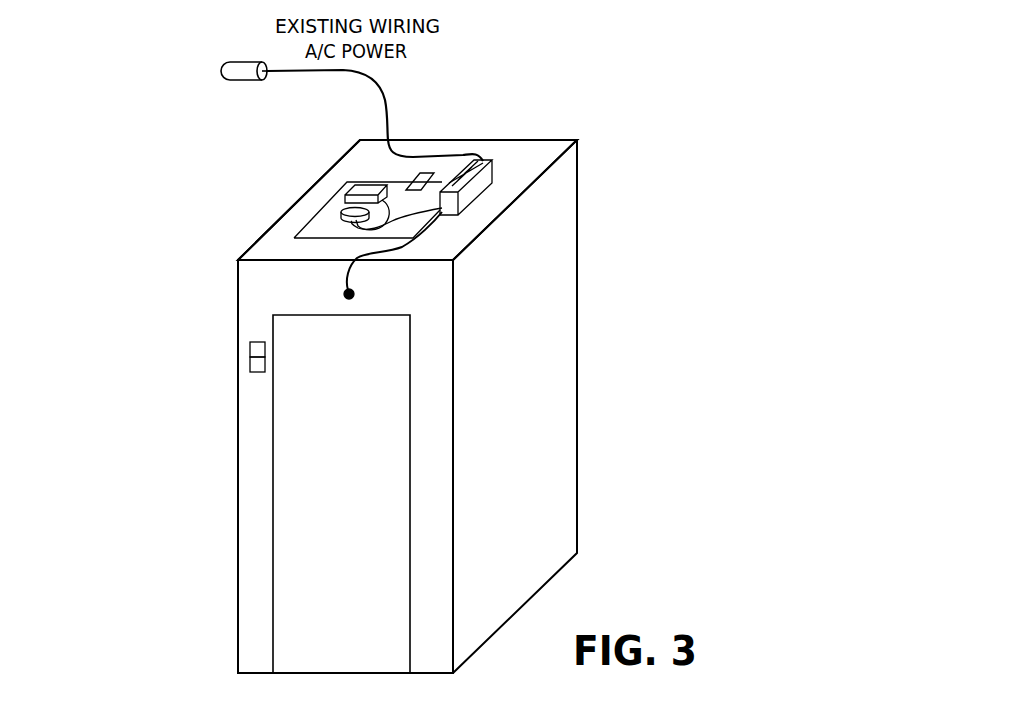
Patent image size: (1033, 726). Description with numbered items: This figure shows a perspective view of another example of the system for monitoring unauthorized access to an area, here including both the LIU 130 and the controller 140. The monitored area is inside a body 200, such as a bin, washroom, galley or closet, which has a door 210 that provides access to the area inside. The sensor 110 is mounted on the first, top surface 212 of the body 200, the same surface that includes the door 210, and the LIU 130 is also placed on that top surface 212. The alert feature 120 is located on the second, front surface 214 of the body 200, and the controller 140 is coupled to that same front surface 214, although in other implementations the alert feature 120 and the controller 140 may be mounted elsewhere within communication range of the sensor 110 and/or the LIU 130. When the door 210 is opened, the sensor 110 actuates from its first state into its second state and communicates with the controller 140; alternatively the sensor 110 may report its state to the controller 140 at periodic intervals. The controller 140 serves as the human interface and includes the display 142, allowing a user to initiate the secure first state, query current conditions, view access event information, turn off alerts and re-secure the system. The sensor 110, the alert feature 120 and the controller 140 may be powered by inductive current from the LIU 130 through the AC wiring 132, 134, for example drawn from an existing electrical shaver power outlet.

The body 200 is at (577, 397).
The first surface 212 is at (360, 152).
The door 210 is at (317, 210).
The second surface 214 is at (257, 425).
The AC wiring 134 is at (388, 104).
The sensor 110 is at (436, 172).
The LIU 130 is at (492, 167).
The AC wiring 132 is at (438, 235).
The alert feature 120 is at (343, 294).
The controller 140 is at (250, 347).
The display 142 is at (250, 365).